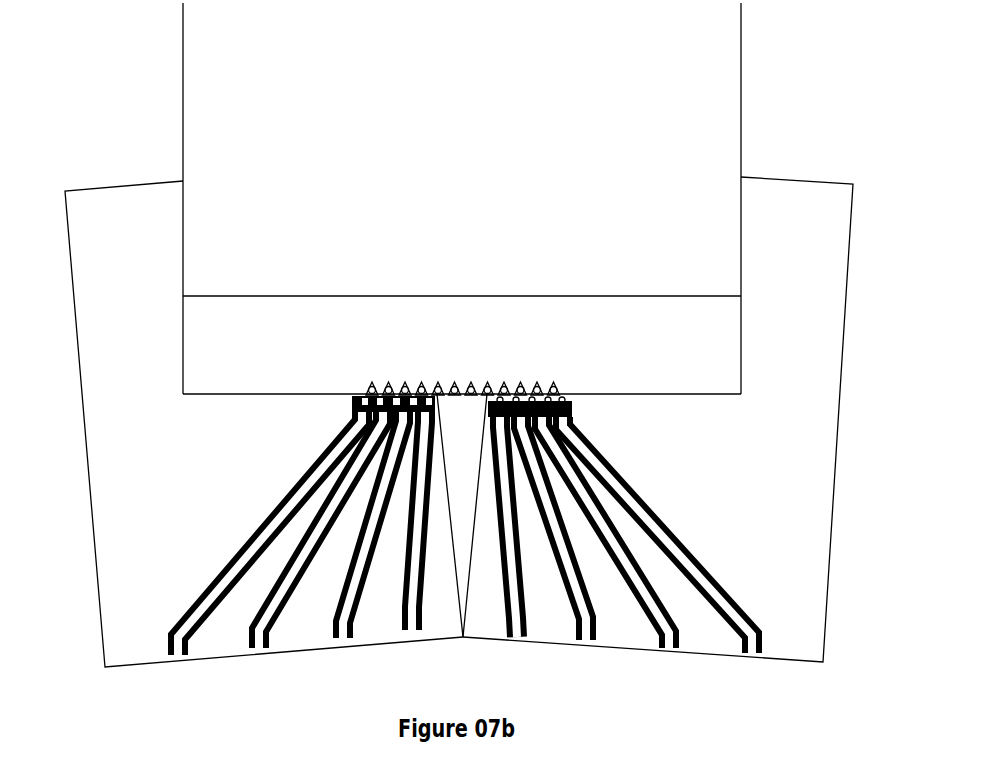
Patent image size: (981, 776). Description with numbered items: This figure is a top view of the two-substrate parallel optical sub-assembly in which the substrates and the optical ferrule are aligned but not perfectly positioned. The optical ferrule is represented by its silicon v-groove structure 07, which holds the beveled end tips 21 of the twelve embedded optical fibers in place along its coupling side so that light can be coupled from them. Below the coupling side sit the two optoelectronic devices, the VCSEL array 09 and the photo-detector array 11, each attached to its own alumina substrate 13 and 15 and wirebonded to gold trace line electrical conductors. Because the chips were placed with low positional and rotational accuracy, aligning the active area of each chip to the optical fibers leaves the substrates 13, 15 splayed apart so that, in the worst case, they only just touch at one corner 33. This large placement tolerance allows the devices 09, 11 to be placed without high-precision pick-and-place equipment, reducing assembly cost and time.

The silicon v-groove structure 07 is at (518, 260).
The beveled end tips of the optical fibers 21 is at (563, 385).
The VCSEL array 09 is at (352, 407).
The photo-detector array 11 is at (575, 405).
The alumina substrate 13 is at (125, 502).
The alumina substrate 15 is at (797, 512).
The corner 33 is at (463, 637).